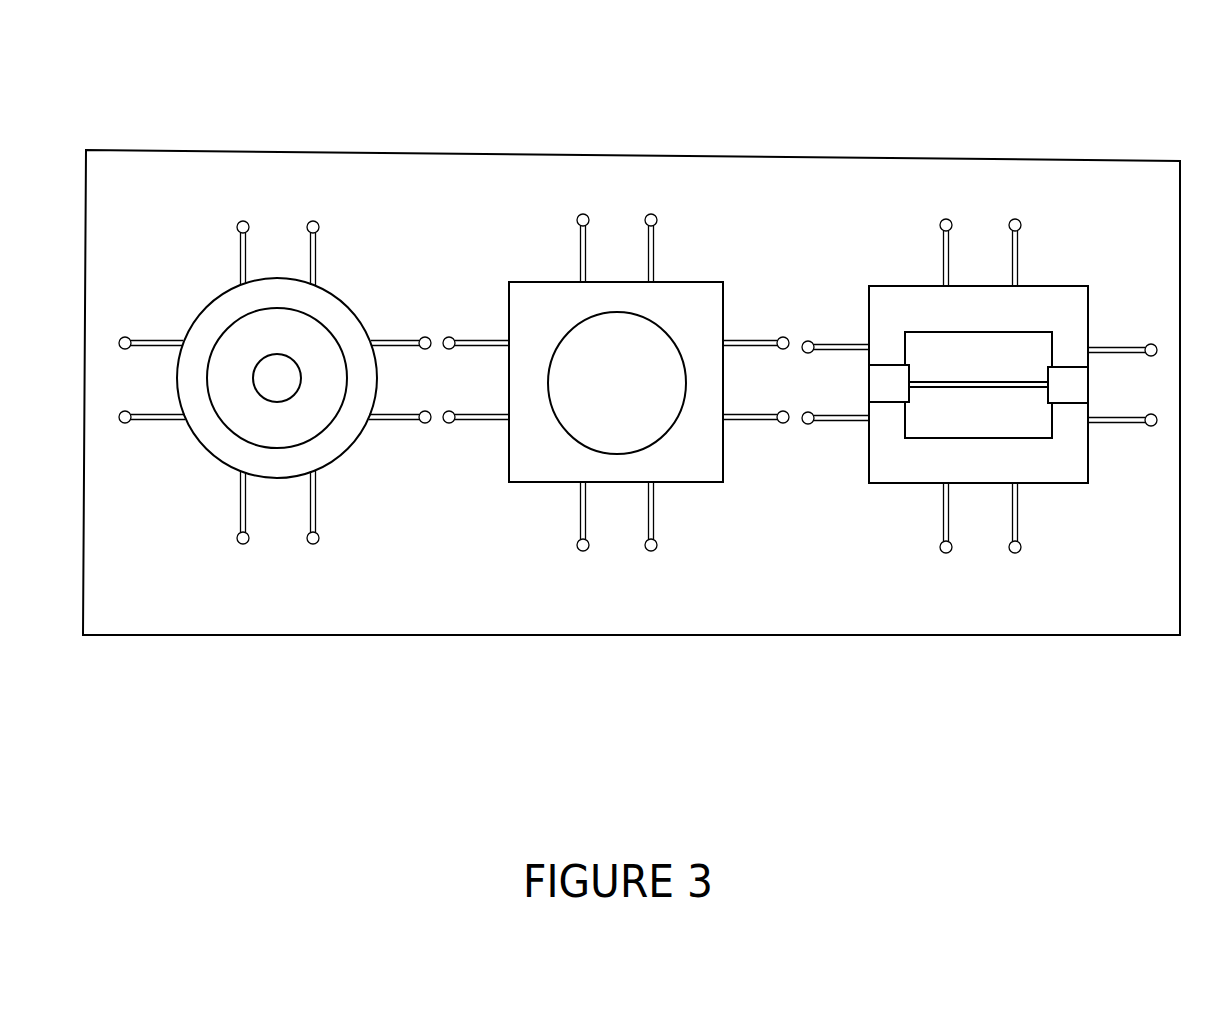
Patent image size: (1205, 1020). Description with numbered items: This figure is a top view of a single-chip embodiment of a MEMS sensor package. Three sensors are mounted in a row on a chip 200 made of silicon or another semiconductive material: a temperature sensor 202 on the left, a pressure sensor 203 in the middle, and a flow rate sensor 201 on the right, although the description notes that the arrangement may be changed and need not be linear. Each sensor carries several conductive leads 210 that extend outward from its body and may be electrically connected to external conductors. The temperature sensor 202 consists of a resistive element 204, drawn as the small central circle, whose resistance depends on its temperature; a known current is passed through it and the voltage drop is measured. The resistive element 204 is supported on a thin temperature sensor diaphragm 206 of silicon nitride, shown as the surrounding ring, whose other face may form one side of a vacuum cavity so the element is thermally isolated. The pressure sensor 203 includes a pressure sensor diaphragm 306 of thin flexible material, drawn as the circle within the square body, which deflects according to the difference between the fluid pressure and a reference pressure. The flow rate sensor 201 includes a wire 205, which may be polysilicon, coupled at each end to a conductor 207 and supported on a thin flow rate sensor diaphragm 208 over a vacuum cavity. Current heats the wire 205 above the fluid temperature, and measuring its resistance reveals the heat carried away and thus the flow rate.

The chip 200 is at (445, 148).
The flow rate sensor 201 is at (979, 417).
The temperature sensor 202 is at (311, 382).
The pressure sensor 203 is at (616, 401).
The resistive element 204 is at (268, 372).
The wire 205 is at (938, 380).
The temperature sensor diaphragm 206 is at (305, 338).
The conductor 207 is at (1066, 392).
The flow rate sensor diaphragm 208 is at (1032, 343).
The conductive leads 210 is at (236, 545).
The pressure sensor diaphragm 306 is at (667, 352).